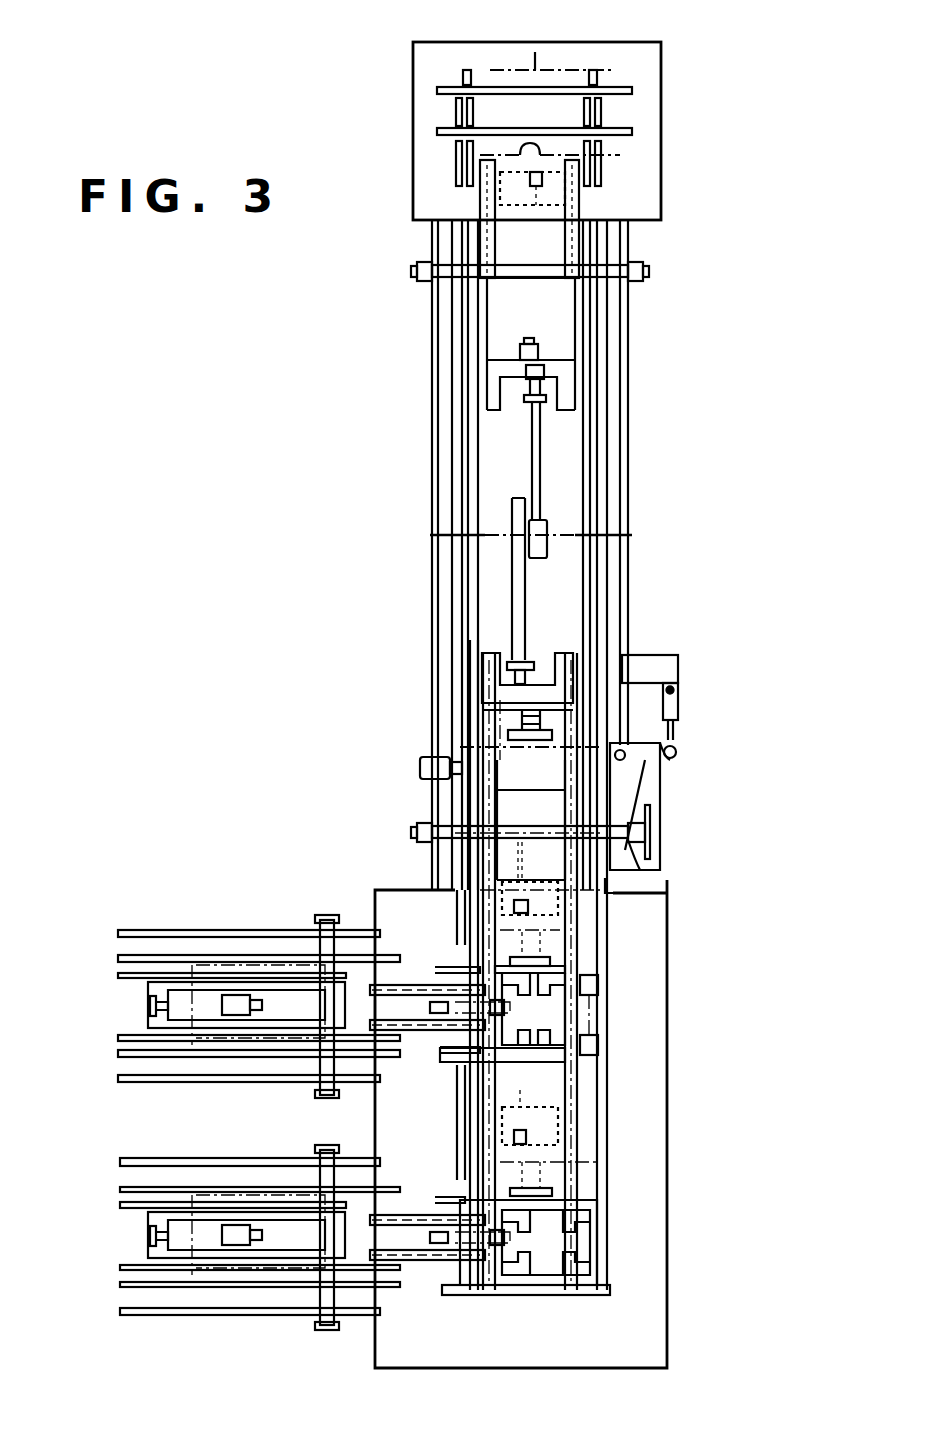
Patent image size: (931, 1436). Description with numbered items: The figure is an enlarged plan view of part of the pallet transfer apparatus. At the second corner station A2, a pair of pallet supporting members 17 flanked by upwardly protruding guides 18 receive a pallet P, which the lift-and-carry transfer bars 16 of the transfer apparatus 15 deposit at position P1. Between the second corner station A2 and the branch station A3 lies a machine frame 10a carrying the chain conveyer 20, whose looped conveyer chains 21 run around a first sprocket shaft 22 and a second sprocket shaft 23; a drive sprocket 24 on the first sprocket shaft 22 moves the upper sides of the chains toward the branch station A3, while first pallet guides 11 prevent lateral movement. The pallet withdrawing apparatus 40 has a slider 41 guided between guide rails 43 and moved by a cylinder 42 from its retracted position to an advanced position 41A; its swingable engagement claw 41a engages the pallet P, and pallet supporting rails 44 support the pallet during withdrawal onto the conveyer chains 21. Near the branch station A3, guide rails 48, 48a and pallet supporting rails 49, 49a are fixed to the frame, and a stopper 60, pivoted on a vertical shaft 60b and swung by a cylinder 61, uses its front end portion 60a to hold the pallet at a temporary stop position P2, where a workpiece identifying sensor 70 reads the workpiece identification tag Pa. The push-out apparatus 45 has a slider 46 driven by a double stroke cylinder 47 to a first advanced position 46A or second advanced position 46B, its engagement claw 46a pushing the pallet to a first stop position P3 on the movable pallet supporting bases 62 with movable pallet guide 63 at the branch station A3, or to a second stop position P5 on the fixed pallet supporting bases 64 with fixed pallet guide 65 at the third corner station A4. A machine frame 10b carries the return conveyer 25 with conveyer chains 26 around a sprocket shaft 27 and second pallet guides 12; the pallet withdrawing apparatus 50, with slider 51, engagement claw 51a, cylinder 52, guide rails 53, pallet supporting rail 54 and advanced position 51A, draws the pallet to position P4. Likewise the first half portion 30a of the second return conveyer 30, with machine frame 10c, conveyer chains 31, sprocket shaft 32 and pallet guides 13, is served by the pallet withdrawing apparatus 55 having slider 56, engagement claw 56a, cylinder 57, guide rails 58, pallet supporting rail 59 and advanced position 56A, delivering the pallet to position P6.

The transfer apparatus 15 is at (410, 88).
The second corner station A2 is at (662, 80).
The pallet P is at (537, 45).
The position P1 is at (497, 62).
The transfer bars 16 is at (628, 92).
The pallet supporting members 17 is at (462, 74).
The guides 18 is at (458, 158).
The advanced position 41A is at (560, 185).
The machine frame 10a is at (432, 428).
The first pallet guides 11 is at (452, 331).
The conveyer chains 21 is at (590, 420).
The pallet conveyer 20 is at (468, 480).
The guide rails 43 is at (472, 302).
The second sprocket shaft 23 is at (430, 268).
The first sprocket shaft 22 is at (447, 830).
The drive sprocket 24 is at (650, 830).
The pallet supporting rail 44 is at (496, 247).
The slider 41 is at (490, 385).
The engagement claw 41a is at (528, 342).
The cylinder 42 is at (532, 448).
The pallet withdrawing apparatus 40 is at (552, 422).
The double stroke cylinder 47 is at (526, 580).
The push-out apparatus 45 is at (548, 640).
The guide rail 48a is at (482, 680).
The slider 46 is at (482, 670).
The guide rail 48 is at (578, 672).
The engagement claw 46a is at (530, 742).
The temporary stop position P2 is at (490, 720).
The workpiece identification tag Pa is at (480, 760).
The workpiece identifying sensor 70 is at (420, 768).
The cylinder 61 is at (680, 698).
The stopper 60 is at (632, 793).
The vertical shaft 60b is at (632, 780).
The front end portion 60a is at (640, 872).
The pallet supporting rail 49 is at (565, 808).
The pallet supporting rail 49a is at (500, 870).
The branch station A3 is at (670, 1003).
The third corner station A4 is at (670, 1253).
The first advanced position 46A is at (560, 935).
The movable pallet guide 63 is at (545, 1062).
The movable pallet supporting bases 62 is at (598, 985).
The second advanced position 46B is at (560, 1170).
The fixed pallet supporting bases 64 is at (595, 1210).
The fixed pallet guide 65 is at (515, 1295).
The advanced position 51A is at (440, 1002).
The first stop position P3 is at (458, 1010).
The pallet supporting rail 54 is at (405, 985).
The pallet supporting rail 59 is at (412, 1262).
The second stop position P5 is at (462, 1215).
The advanced position 56A is at (442, 1262).
The pallet withdrawing apparatus 50 is at (220, 987).
The return conveyer 25 is at (110, 968).
The second pallet guides 12 is at (250, 955).
The machine frame 10b is at (208, 930).
The guide rails 53 is at (278, 980).
The conveyer chains 26 is at (118, 1052).
The sprocket shaft 27 is at (330, 960).
The slider 51 is at (210, 1018).
The engagement claw 51a is at (262, 1006).
The cylinder 52 is at (145, 1006).
The pallet withdrawing apparatus 55 is at (219, 1248).
The first half portion 30a is at (114, 1205).
The pallet guides 13 is at (203, 1285).
The guide rails 58 is at (250, 1262).
The conveyer chains 31 is at (120, 1278).
The second return conveyer 30 is at (112, 1305).
The sprocket shaft 32 is at (320, 1300).
The slider 56 is at (183, 1248).
The engagement claw 56a is at (262, 1236).
The cylinder 57 is at (145, 1236).
The position P4 is at (190, 968).
The position P6 is at (190, 1200).
The machine frame 10c is at (152, 1158).